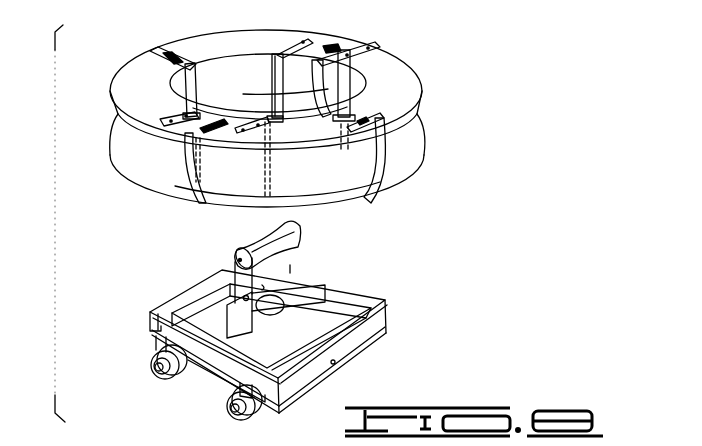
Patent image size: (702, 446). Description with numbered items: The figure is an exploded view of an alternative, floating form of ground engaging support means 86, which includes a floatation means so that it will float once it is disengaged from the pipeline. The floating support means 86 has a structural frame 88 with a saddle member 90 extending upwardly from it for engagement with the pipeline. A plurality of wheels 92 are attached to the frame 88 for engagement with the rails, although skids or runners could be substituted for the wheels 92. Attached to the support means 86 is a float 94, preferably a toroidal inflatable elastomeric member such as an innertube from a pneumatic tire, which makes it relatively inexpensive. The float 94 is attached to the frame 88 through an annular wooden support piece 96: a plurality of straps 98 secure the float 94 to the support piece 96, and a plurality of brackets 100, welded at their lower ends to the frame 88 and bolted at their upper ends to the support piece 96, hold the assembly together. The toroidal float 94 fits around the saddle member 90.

The floating support means 86 is at (299, 330).
The structural frame 88 is at (342, 284).
The saddle member 90 is at (285, 228).
The wheels 92 is at (177, 383).
The float 94 is at (407, 140).
The annular wooden support piece 96 is at (198, 42).
The straps 98 is at (160, 46).
The brackets 100 is at (287, 42).